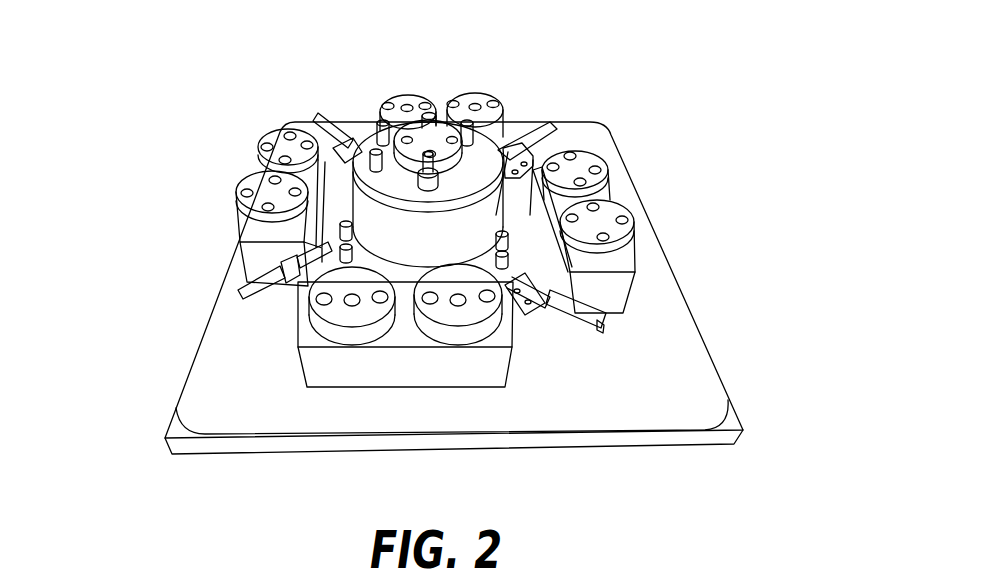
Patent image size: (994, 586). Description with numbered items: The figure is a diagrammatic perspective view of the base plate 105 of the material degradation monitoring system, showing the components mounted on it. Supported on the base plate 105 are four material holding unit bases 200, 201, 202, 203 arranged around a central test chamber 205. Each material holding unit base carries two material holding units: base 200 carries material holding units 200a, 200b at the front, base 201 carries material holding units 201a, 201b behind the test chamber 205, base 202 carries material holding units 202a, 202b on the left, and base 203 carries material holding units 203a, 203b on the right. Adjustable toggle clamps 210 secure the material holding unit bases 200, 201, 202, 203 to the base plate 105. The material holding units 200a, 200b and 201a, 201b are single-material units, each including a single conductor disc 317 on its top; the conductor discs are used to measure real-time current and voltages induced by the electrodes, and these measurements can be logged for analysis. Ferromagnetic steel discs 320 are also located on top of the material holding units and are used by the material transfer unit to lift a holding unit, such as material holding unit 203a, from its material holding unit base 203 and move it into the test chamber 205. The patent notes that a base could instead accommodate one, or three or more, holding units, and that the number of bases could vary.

The base plate 105 is at (687, 363).
The material holding unit base 200 is at (367, 385).
The material holding unit 200a is at (330, 318).
The material holding unit 200b is at (532, 385).
The material holding unit base 201 is at (476, 74).
The material holding unit 201a is at (414, 98).
The material holding unit 201b is at (482, 93).
The material holding unit base 202 is at (214, 183).
The material holding unit 202a is at (248, 181).
The material holding unit 202b is at (272, 134).
The material holding unit base 203 is at (650, 213).
The material holding unit 203a is at (588, 155).
The material holding unit 203b is at (612, 208).
The test chamber 205 is at (450, 246).
The adjustable toggle clamps 210 is at (317, 116).
The conductor disc 317 is at (458, 302).
The ferromagnetic steel discs 320 is at (430, 300).